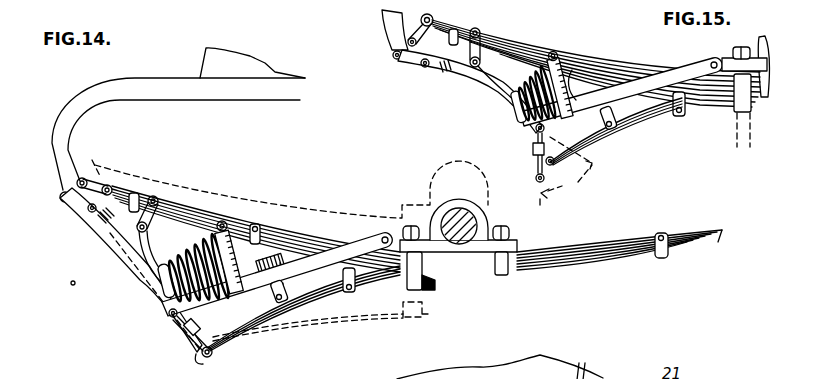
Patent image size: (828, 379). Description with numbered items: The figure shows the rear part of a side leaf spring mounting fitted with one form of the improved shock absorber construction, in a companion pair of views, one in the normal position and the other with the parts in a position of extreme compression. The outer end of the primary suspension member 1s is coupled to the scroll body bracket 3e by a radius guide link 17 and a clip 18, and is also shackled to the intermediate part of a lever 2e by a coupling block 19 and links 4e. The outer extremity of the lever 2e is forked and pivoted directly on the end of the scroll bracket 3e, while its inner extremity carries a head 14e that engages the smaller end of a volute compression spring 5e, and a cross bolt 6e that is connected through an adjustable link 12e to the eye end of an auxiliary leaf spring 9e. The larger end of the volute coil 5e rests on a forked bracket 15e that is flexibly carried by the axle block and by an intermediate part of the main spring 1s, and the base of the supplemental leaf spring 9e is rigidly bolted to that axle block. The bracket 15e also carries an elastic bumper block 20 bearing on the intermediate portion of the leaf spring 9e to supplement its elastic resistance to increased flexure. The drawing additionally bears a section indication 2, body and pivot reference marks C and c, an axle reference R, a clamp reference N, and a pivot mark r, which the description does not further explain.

In FIG. 14, the primary suspension member 1s is at (284, 238).
In FIG. 15, the primary suspension member 1s is at (613, 68).
In FIG. 14, the lever 2e is at (118, 233).
In FIG. 15, the lever 2e is at (458, 74).
In FIG. 14, the scroll body bracket 3e is at (75, 118).
In FIG. 15, the scroll body bracket 3e is at (386, 22).
In FIG. 14, the links 4e is at (158, 208).
In FIG. 15, the links 4e is at (484, 40).
In FIG. 14, the volute compression spring 5e is at (194, 251).
In FIG. 15, the volute compression spring 5e is at (532, 80).
In FIG. 14, the cross bolt 6e is at (168, 313).
In FIG. 15, the cross bolt 6e is at (535, 128).
In FIG. 14, the auxiliary leaf spring 9e is at (248, 303).
In FIG. 15, the auxiliary leaf spring 9e is at (590, 133).
In FIG. 14, the adjustable link 12e is at (196, 345).
In FIG. 15, the adjustable link 12e is at (534, 150).
In FIG. 14, the head 14e is at (161, 278).
In FIG. 15, the head 14e is at (513, 108).
In FIG. 14, the forked bracket 15e is at (228, 231).
In FIG. 15, the forked bracket 15e is at (560, 60).
In FIG. 14, the radius guide link 17 is at (97, 184).
In FIG. 15, the radius guide link 17 is at (407, 43).
In FIG. 14, the clip 18 is at (61, 195).
In FIG. 15, the clip 18 is at (393, 56).
In FIG. 14, the coupling block 19 is at (128, 193).
In FIG. 15, the coupling block 19 is at (447, 30).
In FIG. 14, the elastic bumper block 20 is at (285, 280).
In FIG. 15, the elastic bumper block 20 is at (620, 116).
In FIG. 15, the section line 2 is at (571, 166).
In FIG. 14, the chassis body line C is at (291, 189).
In FIG. 14, the frame pivot c is at (93, 160).
In FIG. 14, the axle reference R is at (327, 321).
In FIG. 15, the clamp reference N is at (733, 147).
In FIG. 14, the pivot r is at (198, 363).